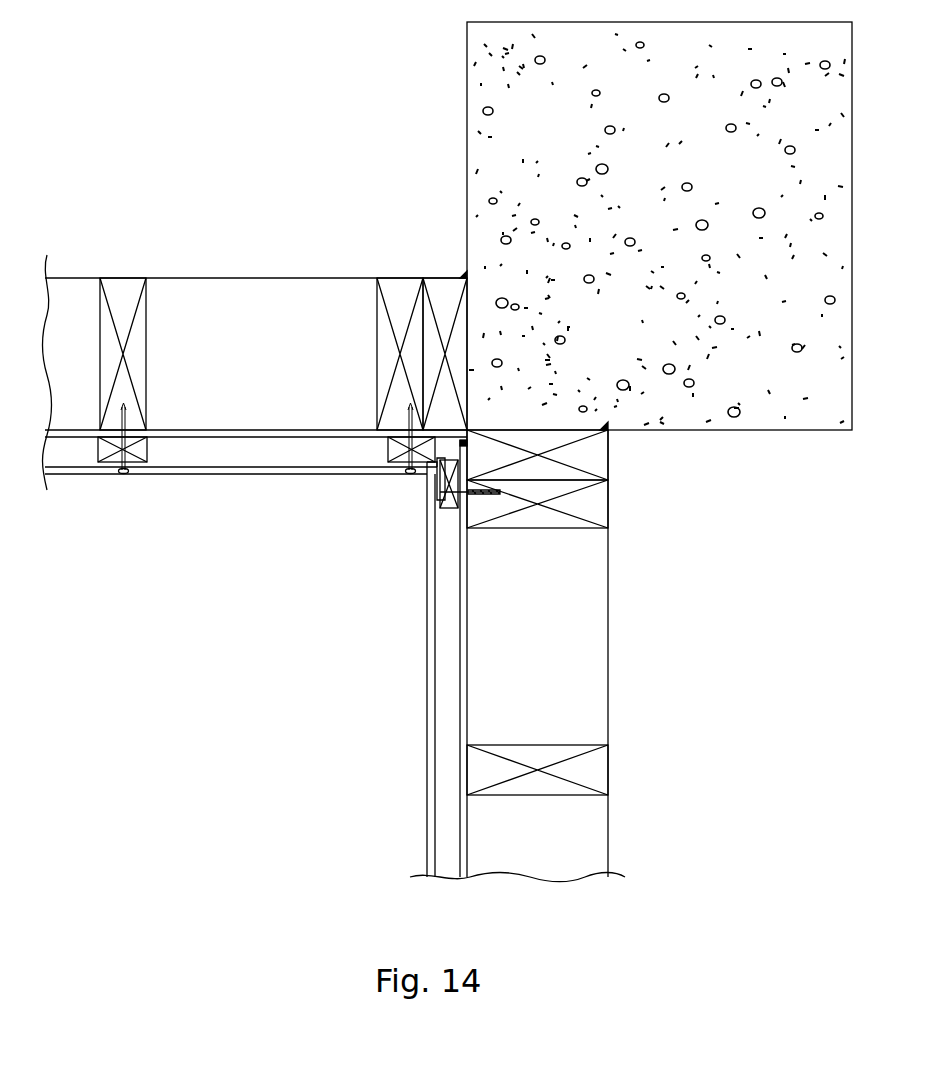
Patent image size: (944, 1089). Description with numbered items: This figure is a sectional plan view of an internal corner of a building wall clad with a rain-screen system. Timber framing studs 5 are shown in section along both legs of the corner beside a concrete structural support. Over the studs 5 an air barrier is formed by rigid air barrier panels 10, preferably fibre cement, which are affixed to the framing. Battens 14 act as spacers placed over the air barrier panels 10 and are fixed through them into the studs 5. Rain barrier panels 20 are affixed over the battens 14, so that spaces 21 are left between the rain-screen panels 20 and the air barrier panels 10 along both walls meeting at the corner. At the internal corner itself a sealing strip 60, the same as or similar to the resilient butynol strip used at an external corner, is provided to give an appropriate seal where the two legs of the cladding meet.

The studs 5 is at (140, 354).
The air barrier panel 10 is at (292, 432).
The battens 14 is at (107, 455).
The rain barrier panels 20 is at (190, 470).
The spaces 21 is at (299, 467).
The sealing strip 60 is at (430, 476).